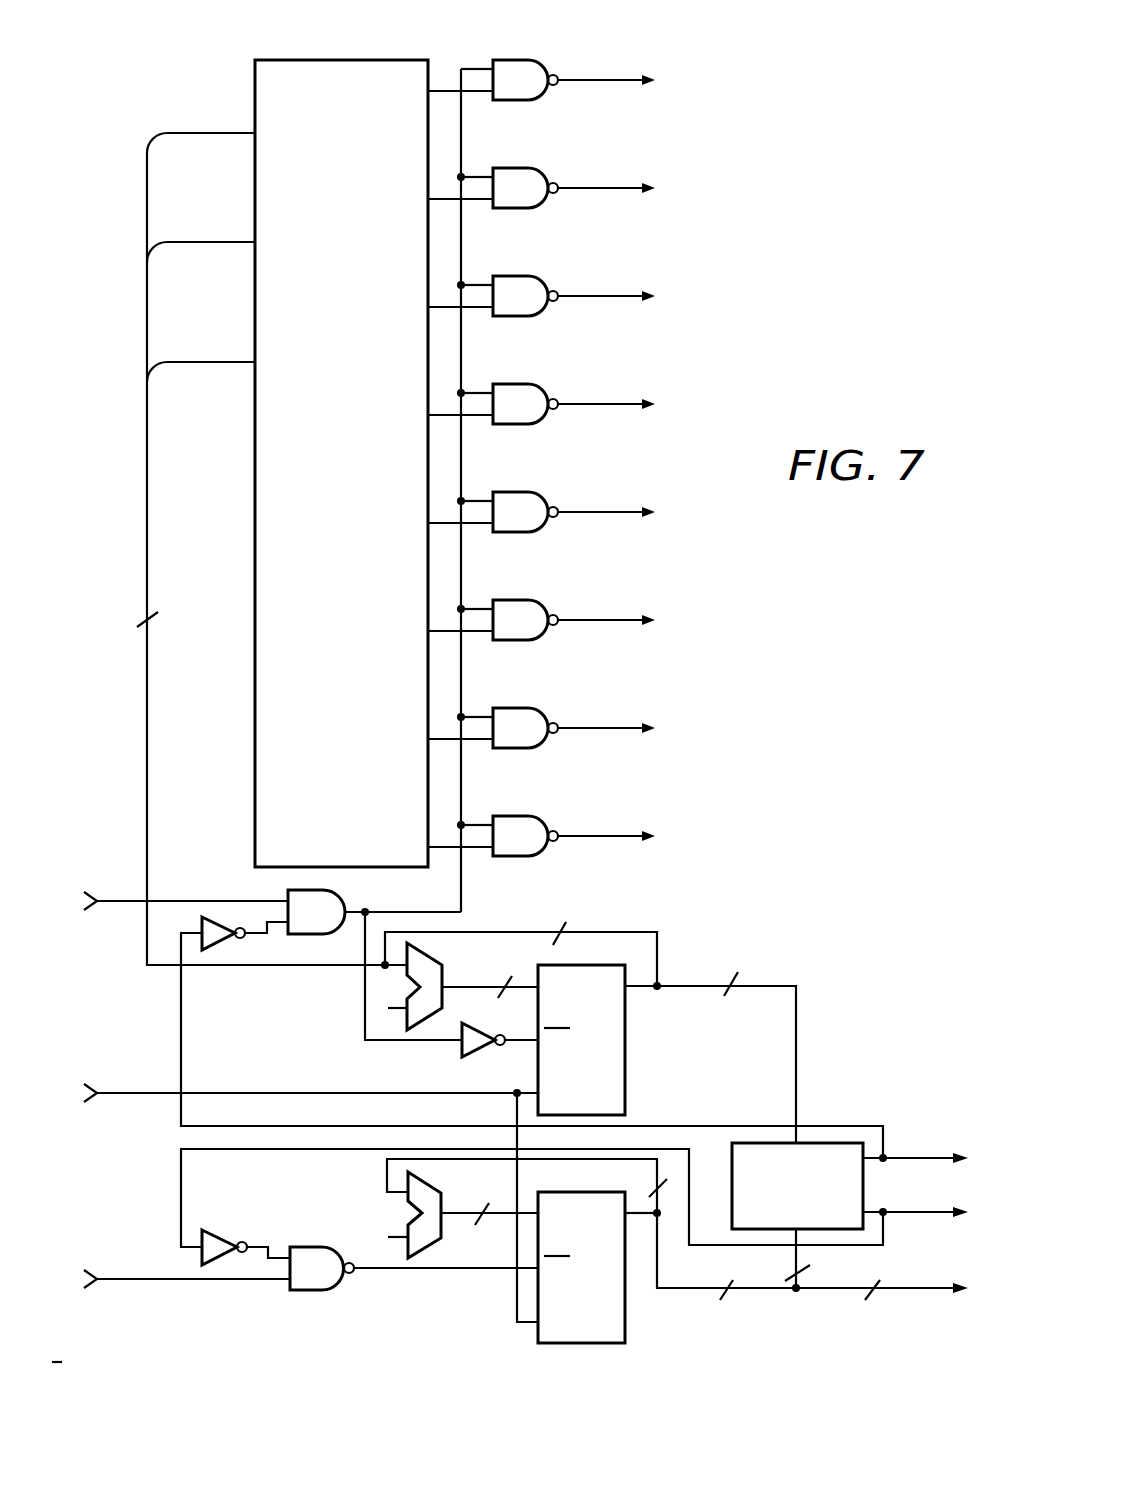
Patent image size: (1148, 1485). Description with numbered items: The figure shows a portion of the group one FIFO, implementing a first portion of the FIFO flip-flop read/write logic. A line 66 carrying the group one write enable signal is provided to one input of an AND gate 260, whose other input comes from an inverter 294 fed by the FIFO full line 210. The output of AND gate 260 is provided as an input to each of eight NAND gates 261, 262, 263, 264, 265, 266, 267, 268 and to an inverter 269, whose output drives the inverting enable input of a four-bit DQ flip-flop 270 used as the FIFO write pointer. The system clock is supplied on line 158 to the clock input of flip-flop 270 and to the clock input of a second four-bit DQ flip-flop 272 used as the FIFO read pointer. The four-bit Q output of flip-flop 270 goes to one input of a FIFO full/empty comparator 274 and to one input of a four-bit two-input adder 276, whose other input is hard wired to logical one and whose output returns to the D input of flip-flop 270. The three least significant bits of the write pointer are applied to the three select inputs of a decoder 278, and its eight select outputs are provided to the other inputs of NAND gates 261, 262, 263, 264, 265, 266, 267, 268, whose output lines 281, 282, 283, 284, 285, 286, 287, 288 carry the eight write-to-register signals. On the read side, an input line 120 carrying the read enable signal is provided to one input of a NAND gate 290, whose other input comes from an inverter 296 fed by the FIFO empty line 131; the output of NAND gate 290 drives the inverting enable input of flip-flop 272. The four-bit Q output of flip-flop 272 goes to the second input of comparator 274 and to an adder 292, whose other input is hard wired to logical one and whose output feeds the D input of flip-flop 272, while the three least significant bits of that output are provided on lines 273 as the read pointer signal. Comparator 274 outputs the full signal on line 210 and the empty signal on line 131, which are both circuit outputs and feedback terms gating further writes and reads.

The decoder 278 is at (340, 58).
The NAND gate 261 is at (518, 59).
The NAND gate 262 is at (518, 167).
The NAND gate 263 is at (518, 275).
The NAND gate 264 is at (518, 383).
The NAND gate 265 is at (518, 491).
The NAND gate 266 is at (518, 599).
The NAND gate 267 is at (518, 707).
The NAND gate 268 is at (518, 815).
The output line 281 is at (612, 79).
The output line 282 is at (612, 187).
The output line 283 is at (612, 295).
The output line 284 is at (612, 403).
The output line 285 is at (612, 511).
The output line 286 is at (612, 619).
The output line 287 is at (612, 727).
The output line 288 is at (612, 835).
The line 66 is at (113, 900).
The inverter 294 is at (218, 916).
The AND gate 260 is at (308, 935).
The adder 276 is at (430, 1023).
The inverter 269 is at (478, 1050).
The DQ flip-flop 270 is at (626, 1073).
The line 158 is at (113, 1092).
The FIFO full/empty comparator 274 is at (760, 1142).
The line 210 is at (904, 1152).
The line 131 is at (905, 1218).
The lines 273 is at (925, 1293).
The DQ flip-flop 272 is at (626, 1310).
The adder 292 is at (428, 1244).
The NAND gate 290 is at (310, 1246).
The inverter 296 is at (221, 1231).
The read request input signal 120 is at (113, 1278).